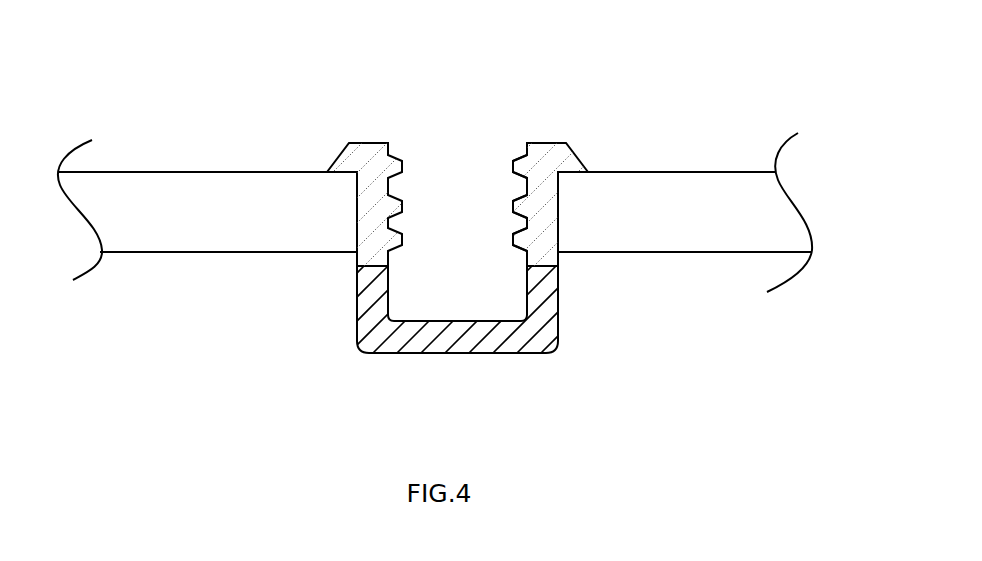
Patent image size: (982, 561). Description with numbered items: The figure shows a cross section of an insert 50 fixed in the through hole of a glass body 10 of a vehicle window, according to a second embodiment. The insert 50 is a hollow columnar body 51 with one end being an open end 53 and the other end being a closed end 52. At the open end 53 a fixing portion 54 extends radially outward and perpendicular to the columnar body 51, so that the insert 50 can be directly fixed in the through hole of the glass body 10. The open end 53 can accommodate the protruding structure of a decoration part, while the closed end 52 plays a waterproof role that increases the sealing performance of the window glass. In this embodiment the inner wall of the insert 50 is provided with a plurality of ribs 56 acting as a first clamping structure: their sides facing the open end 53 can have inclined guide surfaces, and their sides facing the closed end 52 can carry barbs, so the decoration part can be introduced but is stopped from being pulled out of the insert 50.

The glass body 10 is at (203, 236).
The insert 50 is at (490, 226).
The columnar body 51 is at (378, 260).
The closed end 52 is at (473, 340).
The open end 53 is at (451, 154).
The fixing portion 54 is at (548, 138).
The ribs 56 is at (518, 170).